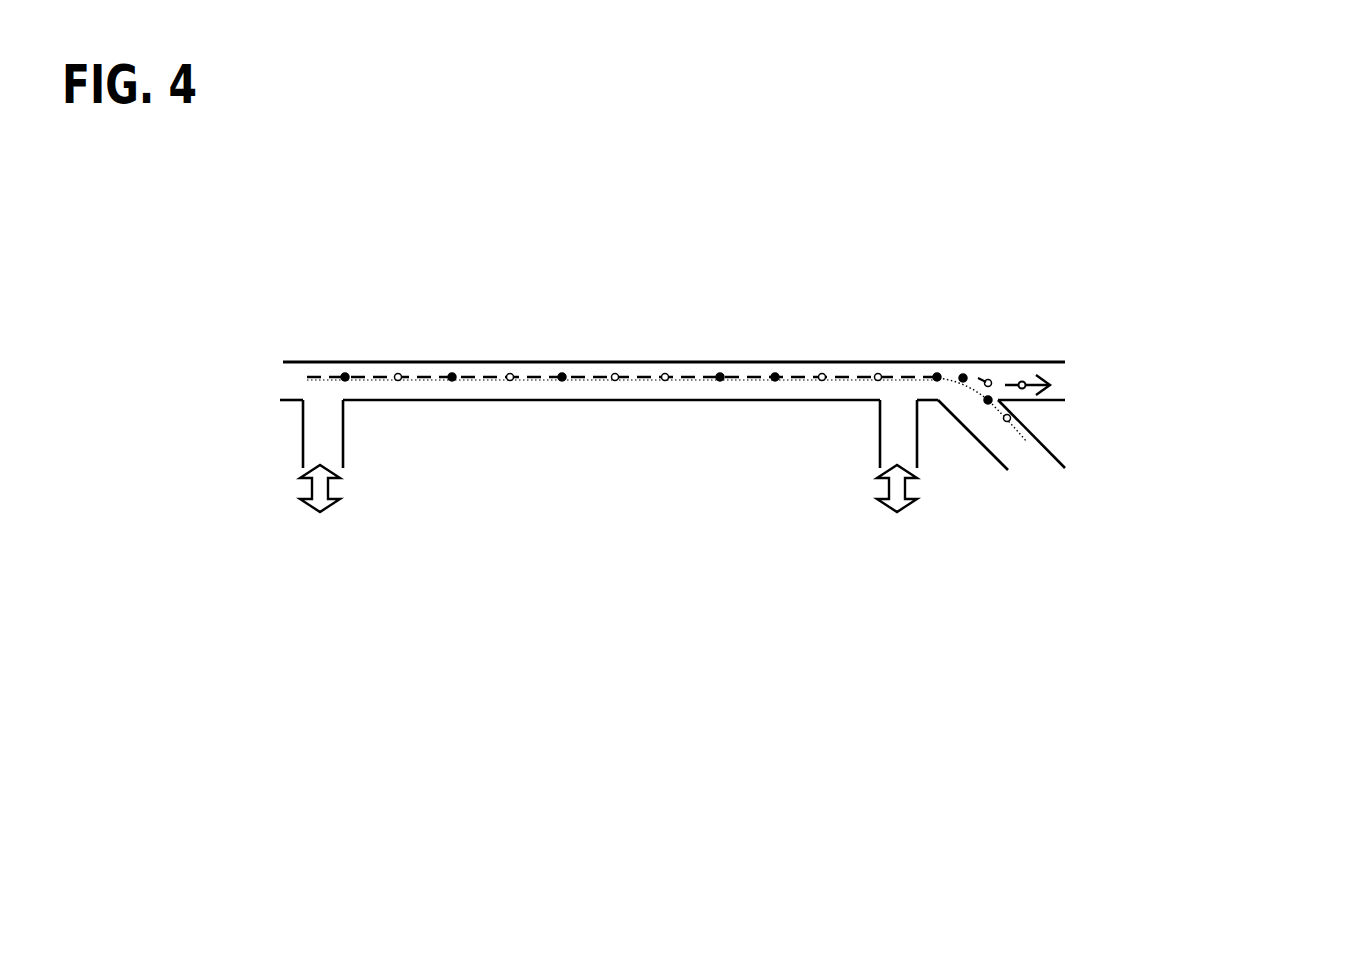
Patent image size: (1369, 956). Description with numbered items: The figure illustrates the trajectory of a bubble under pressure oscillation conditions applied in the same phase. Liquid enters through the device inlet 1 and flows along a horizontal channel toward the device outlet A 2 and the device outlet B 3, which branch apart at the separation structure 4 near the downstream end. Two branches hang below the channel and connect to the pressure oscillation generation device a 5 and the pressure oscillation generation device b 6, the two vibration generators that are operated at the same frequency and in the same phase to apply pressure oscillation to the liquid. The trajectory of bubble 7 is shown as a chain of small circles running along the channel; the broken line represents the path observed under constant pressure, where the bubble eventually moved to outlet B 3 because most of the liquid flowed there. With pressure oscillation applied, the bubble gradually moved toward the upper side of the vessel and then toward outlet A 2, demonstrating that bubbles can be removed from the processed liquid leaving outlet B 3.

The vessel 1 is at (202, 394).
The outlet A (device outlet A) 2 is at (1168, 382).
The outlet B (device outlet B) 3 is at (1168, 454).
The separation structure 4 is at (950, 392).
The pressure oscillation generation device a 5 is at (338, 518).
The pressure oscillation generation device b 6 is at (914, 517).
The trajectory of bubble 7 is at (543, 378).